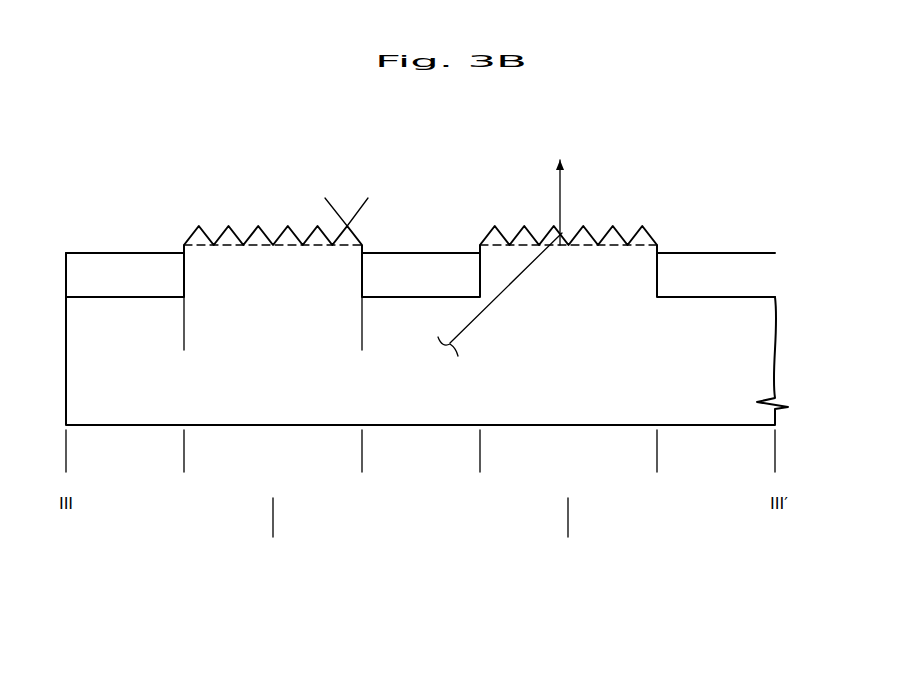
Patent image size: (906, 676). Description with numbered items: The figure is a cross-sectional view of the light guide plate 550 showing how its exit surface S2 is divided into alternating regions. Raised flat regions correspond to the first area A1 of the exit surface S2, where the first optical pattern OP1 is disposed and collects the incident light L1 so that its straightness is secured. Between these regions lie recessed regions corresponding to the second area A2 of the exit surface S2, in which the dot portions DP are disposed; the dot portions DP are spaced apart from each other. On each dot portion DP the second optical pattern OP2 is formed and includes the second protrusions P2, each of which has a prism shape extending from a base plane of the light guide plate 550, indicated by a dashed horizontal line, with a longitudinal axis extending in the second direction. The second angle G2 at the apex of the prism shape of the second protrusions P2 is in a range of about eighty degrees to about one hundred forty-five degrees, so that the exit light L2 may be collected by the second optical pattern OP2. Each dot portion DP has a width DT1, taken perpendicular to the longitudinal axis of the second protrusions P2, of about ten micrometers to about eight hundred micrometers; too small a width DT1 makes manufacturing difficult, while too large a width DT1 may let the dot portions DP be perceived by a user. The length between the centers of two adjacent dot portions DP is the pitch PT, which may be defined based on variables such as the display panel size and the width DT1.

The light guide plate 550 is at (640, 168).
The first optical pattern OP1 is at (109, 263).
The second optical pattern OP2 is at (288, 172).
The dot portion DP is at (194, 265).
The second protrusion P2 is at (230, 233).
The second angle G2 is at (331, 202).
The incident light L1 is at (505, 293).
The exit light L2 is at (562, 195).
The exit surface S2 is at (716, 253).
The width DT1 is at (362, 343).
The first area A1 is at (66, 467).
The second area A2 is at (184, 467).
The pitch PT is at (568, 531).